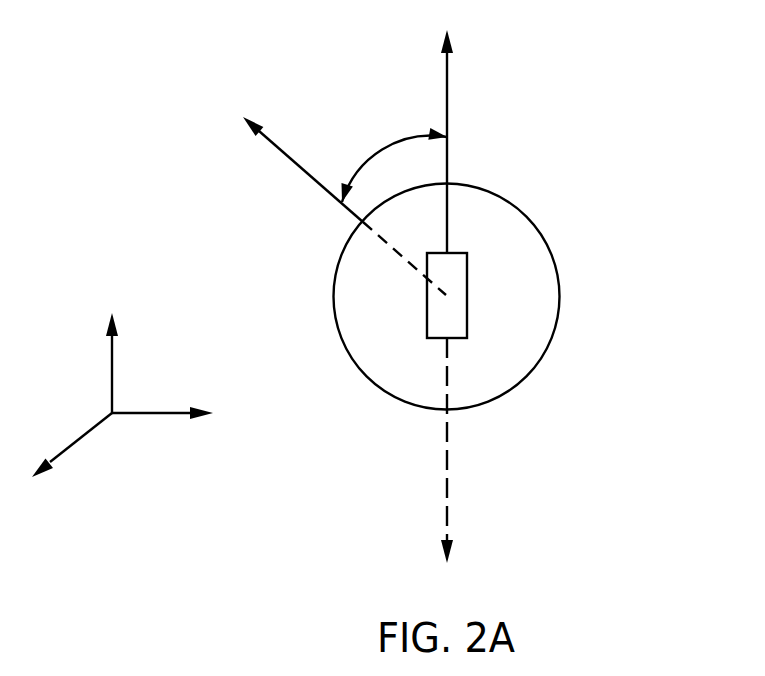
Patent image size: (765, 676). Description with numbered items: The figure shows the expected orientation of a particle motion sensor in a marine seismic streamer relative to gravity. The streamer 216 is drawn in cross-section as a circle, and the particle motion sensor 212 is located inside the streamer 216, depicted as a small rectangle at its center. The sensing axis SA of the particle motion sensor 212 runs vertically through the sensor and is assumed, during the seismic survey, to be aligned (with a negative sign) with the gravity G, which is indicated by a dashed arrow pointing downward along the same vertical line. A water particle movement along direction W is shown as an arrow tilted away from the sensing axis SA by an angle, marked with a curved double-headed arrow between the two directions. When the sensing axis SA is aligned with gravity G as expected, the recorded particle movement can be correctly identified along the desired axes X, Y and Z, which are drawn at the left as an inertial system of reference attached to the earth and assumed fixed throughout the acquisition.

The particle motion sensor 212 is at (467, 295).
The streamer 216 is at (548, 245).
The sensing axis SA is at (447, 120).
The direction W is at (302, 170).
The gravity G is at (447, 490).
The axis X is at (73, 445).
The axis Y is at (162, 413).
The axis Z is at (112, 362).